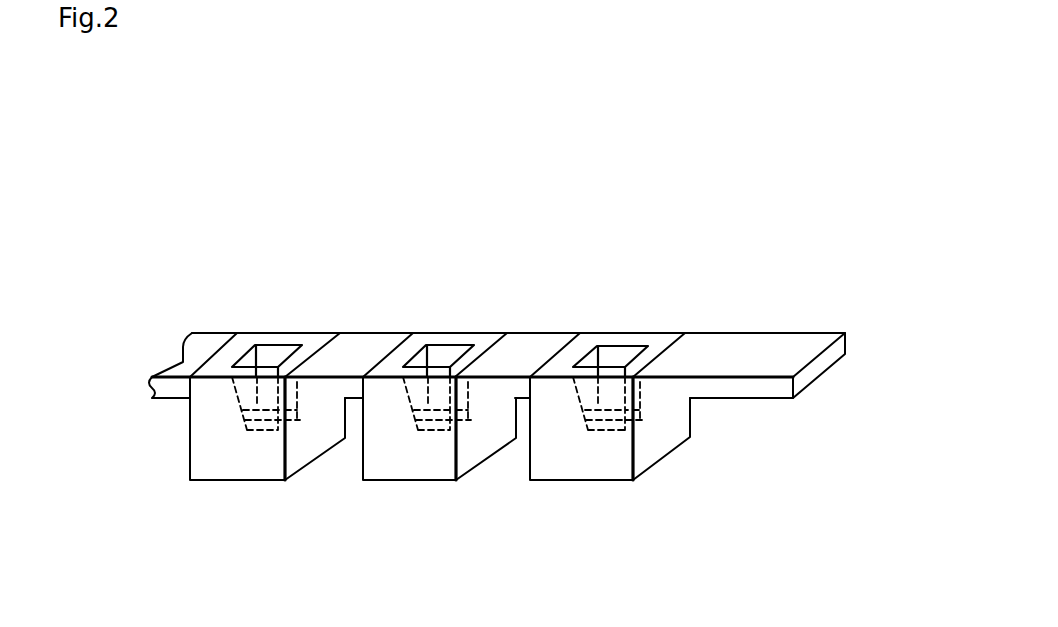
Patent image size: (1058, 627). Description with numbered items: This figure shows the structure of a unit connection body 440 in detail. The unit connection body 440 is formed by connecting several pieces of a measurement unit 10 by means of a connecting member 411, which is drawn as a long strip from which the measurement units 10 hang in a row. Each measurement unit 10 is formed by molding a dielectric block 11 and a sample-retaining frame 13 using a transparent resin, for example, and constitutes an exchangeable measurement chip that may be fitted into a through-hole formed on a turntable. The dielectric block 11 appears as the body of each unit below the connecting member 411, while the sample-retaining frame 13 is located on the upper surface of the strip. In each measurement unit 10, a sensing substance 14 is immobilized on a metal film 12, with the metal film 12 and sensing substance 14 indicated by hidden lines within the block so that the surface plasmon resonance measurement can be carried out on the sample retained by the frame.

The connector terminal assembly 440 is at (541, 243).
The connecting member 411 is at (744, 350).
The sample-retaining frame 13 is at (661, 342).
The measurement unit 10 is at (240, 488).
The dielectric block 11 is at (678, 423).
The metal film 12 is at (628, 428).
The sensing substance 14 is at (620, 413).